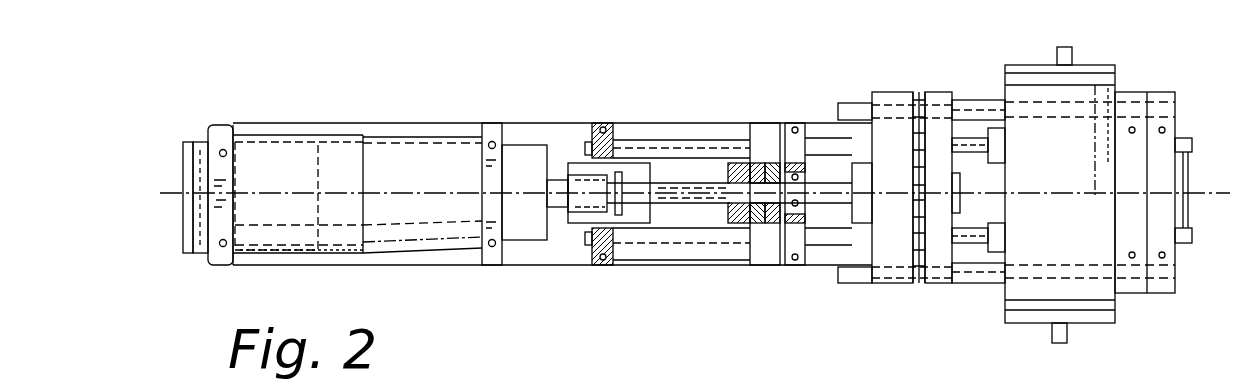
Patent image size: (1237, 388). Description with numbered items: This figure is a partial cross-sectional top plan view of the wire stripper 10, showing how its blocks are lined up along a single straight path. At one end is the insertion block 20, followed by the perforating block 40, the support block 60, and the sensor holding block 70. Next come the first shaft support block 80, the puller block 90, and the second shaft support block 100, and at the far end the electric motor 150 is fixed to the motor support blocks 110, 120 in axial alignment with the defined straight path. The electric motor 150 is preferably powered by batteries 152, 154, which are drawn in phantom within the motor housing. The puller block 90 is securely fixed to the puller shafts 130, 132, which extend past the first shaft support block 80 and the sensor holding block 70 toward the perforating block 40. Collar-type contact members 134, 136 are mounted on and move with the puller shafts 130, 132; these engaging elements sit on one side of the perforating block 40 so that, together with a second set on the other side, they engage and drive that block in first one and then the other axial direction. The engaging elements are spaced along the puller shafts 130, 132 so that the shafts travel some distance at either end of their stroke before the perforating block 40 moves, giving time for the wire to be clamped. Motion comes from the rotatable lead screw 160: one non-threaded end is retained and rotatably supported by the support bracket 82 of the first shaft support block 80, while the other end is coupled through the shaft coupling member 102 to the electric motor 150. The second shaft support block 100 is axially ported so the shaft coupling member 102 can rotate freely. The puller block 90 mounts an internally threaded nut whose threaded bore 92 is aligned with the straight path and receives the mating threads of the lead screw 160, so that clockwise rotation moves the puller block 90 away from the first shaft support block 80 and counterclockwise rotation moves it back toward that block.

The wire stripper 10 is at (400, 104).
The insertion block 20 is at (1158, 92).
The perforating block 40 is at (1095, 73).
The support block 60 is at (937, 97).
The sensor holding block 70 is at (898, 97).
The first shaft support block 80 is at (799, 125).
The support bracket 82 is at (806, 215).
The puller block 90 is at (764, 130).
The threaded bore 92 is at (748, 215).
The second shaft support block 100 is at (635, 84).
The shaft coupling member 102 is at (580, 215).
The motor support block 110 is at (488, 130).
The motor support block 120 is at (220, 131).
The puller shaft 130 is at (714, 146).
The puller shaft 132 is at (710, 238).
The contact member 134 is at (996, 140).
The contact member 136 is at (995, 247).
The electric motor 150 is at (410, 232).
The battery 152 is at (270, 160).
The battery 154 is at (295, 235).
The rotatable lead screw 160 is at (683, 195).